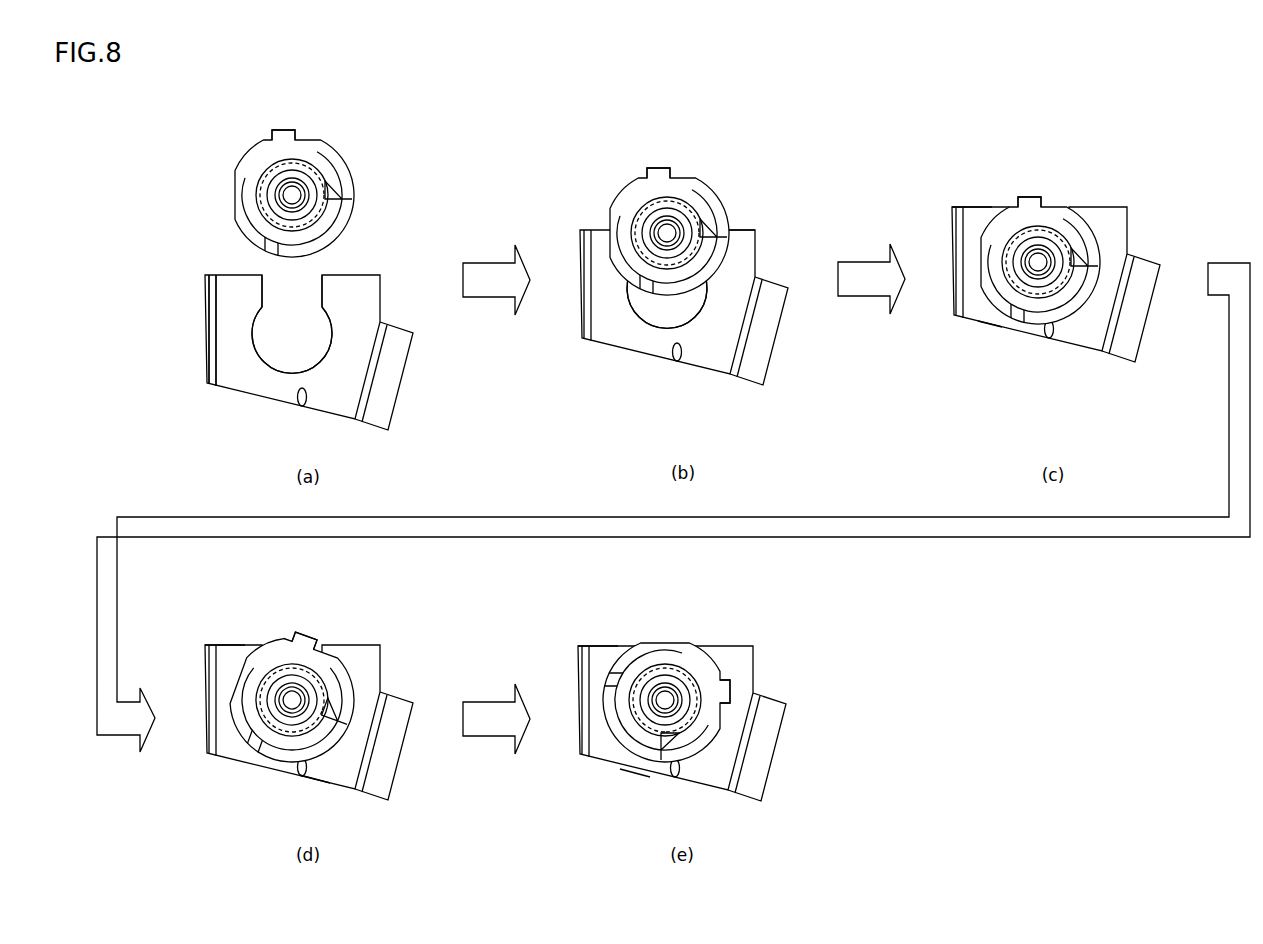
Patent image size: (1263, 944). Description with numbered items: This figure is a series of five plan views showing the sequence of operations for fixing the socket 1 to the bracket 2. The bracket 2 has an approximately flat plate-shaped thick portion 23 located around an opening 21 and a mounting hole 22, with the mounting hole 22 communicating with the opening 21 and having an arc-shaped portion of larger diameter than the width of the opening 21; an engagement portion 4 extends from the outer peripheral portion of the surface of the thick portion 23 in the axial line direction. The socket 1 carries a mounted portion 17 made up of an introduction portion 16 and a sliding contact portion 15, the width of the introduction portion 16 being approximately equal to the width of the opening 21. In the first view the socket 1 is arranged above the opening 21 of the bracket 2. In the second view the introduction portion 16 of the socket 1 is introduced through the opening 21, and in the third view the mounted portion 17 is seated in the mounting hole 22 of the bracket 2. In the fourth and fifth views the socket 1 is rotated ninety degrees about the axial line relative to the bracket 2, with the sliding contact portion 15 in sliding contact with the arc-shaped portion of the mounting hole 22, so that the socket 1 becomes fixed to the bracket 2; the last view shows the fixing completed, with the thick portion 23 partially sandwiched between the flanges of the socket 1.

The socket 1 is at (367, 158).
The bracket 2 is at (220, 395).
The engagement portion 4 is at (302, 407).
The sliding contact portion 15 is at (310, 140).
The introduction portion 16 is at (330, 180).
The mounted portion 17 is at (710, 407).
The opening 21 is at (293, 287).
The mounting hole 22 is at (312, 322).
The thick portion 23 is at (252, 352).